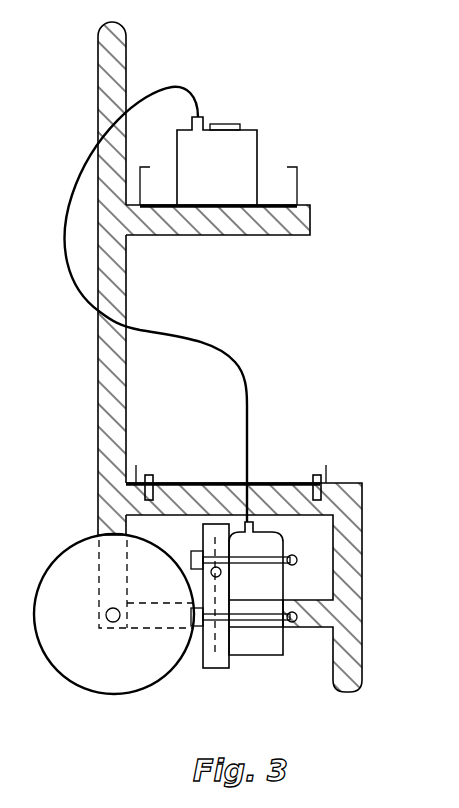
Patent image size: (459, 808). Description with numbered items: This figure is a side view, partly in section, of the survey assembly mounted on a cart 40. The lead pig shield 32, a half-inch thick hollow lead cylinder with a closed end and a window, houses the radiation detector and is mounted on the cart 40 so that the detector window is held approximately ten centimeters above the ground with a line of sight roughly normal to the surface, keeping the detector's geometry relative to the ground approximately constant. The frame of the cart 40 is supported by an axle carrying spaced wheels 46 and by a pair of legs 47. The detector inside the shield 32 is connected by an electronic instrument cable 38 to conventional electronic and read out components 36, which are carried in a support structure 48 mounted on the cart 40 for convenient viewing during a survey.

The lead pig shield 32 is at (253, 645).
The electronic and read out components 36 is at (243, 140).
The electronic instrument cable 38 is at (67, 270).
The cart 40 is at (97, 68).
The wheels 46 is at (62, 565).
The legs 47 is at (362, 688).
The support structure 48 is at (312, 208).